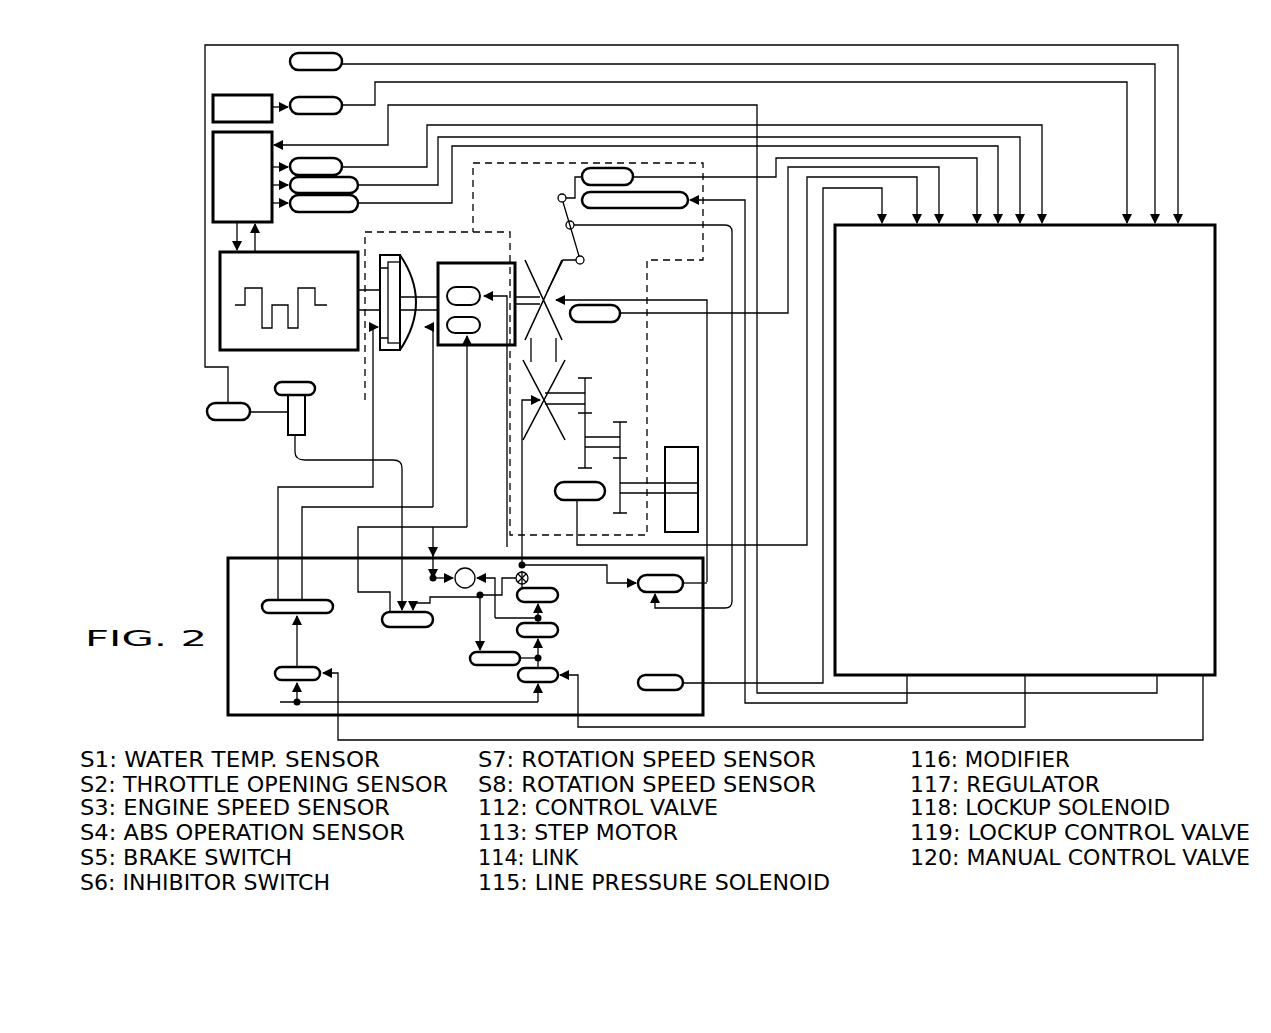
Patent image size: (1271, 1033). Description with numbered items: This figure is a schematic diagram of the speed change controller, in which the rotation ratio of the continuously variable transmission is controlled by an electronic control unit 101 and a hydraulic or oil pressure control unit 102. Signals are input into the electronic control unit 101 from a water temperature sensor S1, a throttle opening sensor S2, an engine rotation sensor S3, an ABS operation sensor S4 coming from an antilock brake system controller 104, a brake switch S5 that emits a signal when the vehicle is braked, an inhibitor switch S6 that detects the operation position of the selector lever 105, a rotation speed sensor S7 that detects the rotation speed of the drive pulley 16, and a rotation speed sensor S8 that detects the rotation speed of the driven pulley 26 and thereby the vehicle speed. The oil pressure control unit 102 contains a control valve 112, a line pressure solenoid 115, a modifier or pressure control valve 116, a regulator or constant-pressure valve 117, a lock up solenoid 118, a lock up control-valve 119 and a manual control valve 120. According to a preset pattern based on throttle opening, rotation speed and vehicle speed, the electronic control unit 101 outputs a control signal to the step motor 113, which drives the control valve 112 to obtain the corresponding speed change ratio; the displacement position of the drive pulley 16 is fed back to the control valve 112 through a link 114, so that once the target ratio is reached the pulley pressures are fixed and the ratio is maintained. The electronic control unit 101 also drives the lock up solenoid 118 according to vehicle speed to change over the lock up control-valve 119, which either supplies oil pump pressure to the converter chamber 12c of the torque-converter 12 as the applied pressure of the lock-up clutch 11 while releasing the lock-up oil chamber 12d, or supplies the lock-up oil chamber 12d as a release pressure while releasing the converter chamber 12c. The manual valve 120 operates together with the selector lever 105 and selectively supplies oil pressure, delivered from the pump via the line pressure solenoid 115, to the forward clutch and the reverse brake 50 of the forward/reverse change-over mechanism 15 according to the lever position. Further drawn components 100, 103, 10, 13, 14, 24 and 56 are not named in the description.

The electronic control unit 101 is at (1198, 225).
The hydraulic control unit 102 is at (244, 558).
The engine control unit 103 is at (213, 178).
The antilock brake system controller 104 is at (213, 102).
The engine 100 is at (326, 350).
The selector lever 105 is at (305, 420).
The engine output shaft 10 is at (372, 298).
The lock-up clutch 11 is at (400, 266).
The torque-converter 12 is at (418, 270).
The converter chamber 12c is at (448, 263).
The lock-up oil chamber 12d is at (381, 286).
The brake 13 is at (430, 325).
The primary pulley 14 is at (527, 262).
The forward/reverse change-over mechanism 15 is at (482, 248).
The drive pulley 16 is at (559, 287).
The V-belt 24 is at (557, 352).
The driven pulley 26 is at (547, 430).
The reverse brake 50 is at (466, 336).
The differential gear 56 is at (616, 495).
The control valve 112 is at (655, 610).
The step motor 113 is at (672, 208).
The link 114 is at (574, 240).
The line pressure solenoid 115 is at (470, 662).
The modifier 116 is at (558, 630).
The regulator 117 is at (558, 596).
The lock up solenoid 118 is at (305, 667).
The lock up control-valve 119 is at (305, 600).
The manual control valve 120 is at (405, 627).
The water temperature sensor S1 is at (352, 212).
The throttle opening sensor S2 is at (358, 190).
The engine rotation sensor S3 is at (344, 165).
The ABS operation sensor S4 is at (320, 97).
The brake switch S5 is at (290, 60).
The inhibitor switch S6 is at (222, 403).
The rotation speed sensor S7 is at (600, 322).
The rotation speed sensor S8 is at (568, 500).